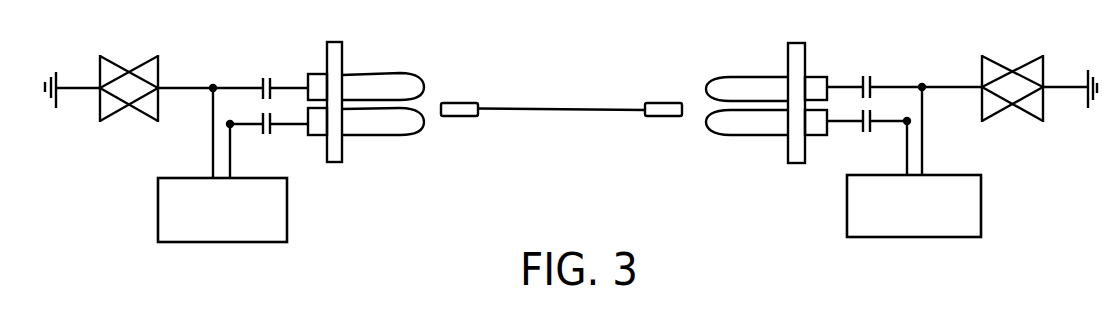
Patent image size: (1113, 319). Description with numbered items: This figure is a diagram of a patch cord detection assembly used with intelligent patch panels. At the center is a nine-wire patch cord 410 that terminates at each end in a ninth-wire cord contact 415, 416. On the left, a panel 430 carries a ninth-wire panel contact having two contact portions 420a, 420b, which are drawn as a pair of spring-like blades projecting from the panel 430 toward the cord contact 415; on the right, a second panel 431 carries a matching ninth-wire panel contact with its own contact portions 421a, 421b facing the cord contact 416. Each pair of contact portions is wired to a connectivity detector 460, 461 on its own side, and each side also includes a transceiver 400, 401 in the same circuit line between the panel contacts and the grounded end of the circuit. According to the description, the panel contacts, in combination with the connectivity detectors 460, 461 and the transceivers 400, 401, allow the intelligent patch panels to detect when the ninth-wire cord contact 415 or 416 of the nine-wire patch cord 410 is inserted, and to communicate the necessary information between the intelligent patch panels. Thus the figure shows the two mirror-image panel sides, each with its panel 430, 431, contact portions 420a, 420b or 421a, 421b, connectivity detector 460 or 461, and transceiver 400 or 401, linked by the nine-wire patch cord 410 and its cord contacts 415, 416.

The transceiver 400 is at (133, 62).
The transceiver 401 is at (1000, 60).
The nine-wire patch cord 410 is at (588, 111).
The ninth-wire cord contact 415 is at (453, 103).
The ninth-wire cord contact 416 is at (663, 103).
The contact portion 420a is at (378, 72).
The contact portion 420b is at (378, 136).
The contact portion 421a is at (710, 78).
The contact portion 421b is at (762, 136).
The panel 430 is at (342, 53).
The panel 431 is at (788, 60).
The connectivity detector 460 is at (237, 242).
The connectivity detector 461 is at (912, 237).